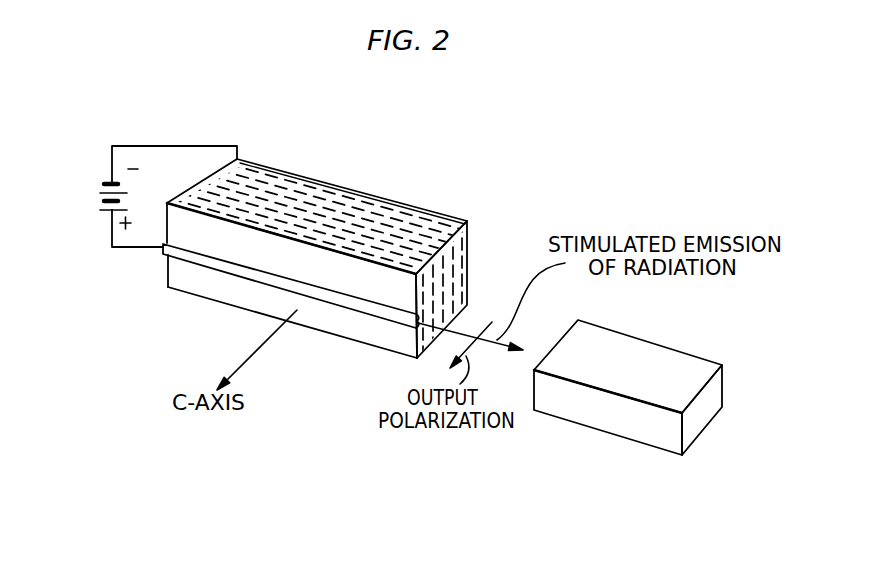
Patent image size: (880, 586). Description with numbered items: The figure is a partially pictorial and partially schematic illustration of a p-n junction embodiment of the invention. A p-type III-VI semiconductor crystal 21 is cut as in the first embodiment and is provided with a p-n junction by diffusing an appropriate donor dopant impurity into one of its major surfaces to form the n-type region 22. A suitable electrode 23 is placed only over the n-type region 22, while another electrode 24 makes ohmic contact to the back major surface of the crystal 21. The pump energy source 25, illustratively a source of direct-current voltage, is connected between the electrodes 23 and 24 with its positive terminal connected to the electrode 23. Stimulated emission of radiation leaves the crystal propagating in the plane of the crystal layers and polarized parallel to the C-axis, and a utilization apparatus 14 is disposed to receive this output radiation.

The utilization apparatus 14 is at (610, 425).
The p-type III-VI semiconductor crystal 21 is at (402, 220).
The n-type region 22 is at (408, 345).
The electrode 23 is at (183, 257).
The electrode 24 is at (290, 175).
The pump energy source 25 is at (130, 200).